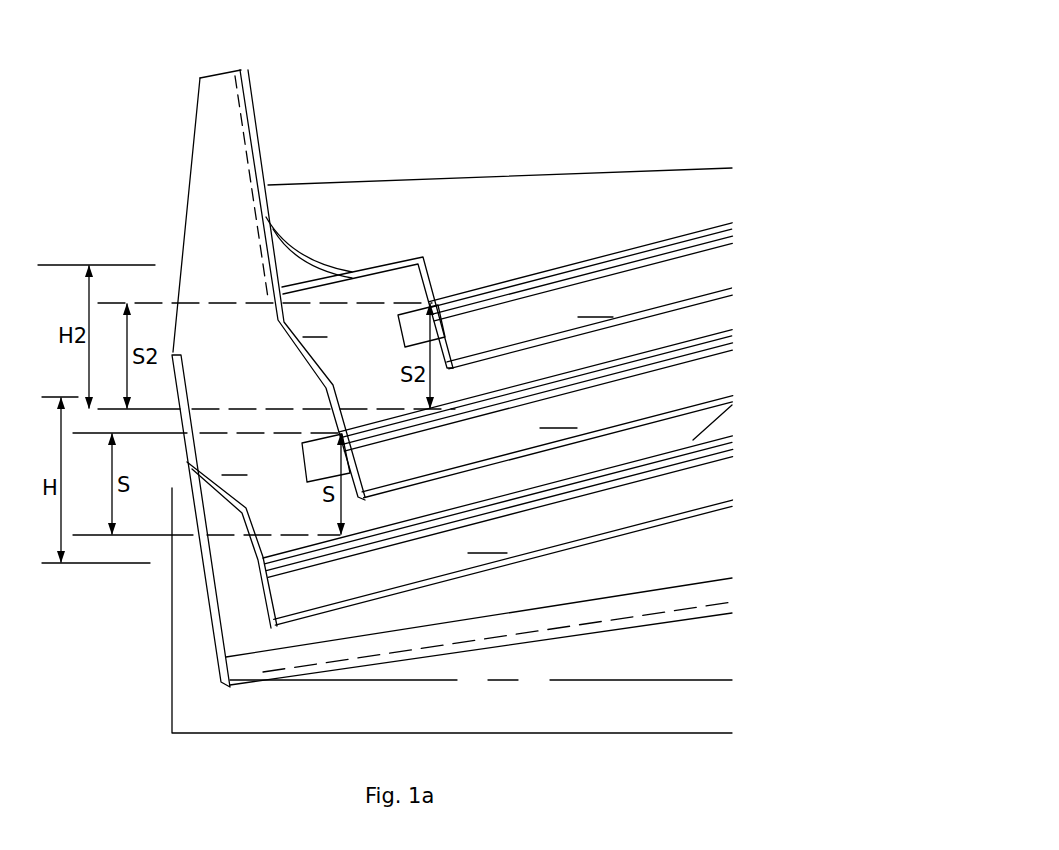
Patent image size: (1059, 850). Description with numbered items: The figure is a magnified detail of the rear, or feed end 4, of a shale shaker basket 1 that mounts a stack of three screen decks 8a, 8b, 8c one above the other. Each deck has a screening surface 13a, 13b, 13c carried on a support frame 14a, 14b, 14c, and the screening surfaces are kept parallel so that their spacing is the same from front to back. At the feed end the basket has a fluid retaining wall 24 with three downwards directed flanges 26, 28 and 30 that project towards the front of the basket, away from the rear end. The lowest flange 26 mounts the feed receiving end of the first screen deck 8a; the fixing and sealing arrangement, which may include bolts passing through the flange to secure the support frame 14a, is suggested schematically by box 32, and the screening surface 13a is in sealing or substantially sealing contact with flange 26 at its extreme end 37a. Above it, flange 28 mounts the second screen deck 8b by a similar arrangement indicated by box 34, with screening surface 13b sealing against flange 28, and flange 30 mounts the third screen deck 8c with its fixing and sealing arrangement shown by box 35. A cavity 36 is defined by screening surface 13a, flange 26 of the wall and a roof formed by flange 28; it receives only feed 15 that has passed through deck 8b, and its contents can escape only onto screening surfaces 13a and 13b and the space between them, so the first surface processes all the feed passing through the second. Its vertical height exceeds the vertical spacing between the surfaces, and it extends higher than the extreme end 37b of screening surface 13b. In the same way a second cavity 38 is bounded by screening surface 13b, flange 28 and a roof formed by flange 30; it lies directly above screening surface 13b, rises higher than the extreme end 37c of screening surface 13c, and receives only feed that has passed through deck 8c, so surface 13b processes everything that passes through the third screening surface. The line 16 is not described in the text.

The basket 1 is at (530, 88).
The feed end 4 is at (148, 184).
The feed 15 is at (348, 118).
The upper surface 16 is at (561, 207).
The flange 30 is at (428, 298).
The first screen deck 8a is at (715, 485).
The second screen deck 8b is at (715, 377).
The third screen deck 8c is at (715, 268).
The screening surface 13a is at (373, 532).
The screening surface 13b is at (463, 398).
The screening surface 13c is at (579, 262).
The support frame 14a is at (488, 543).
The support frame 14b is at (560, 415).
The support frame 14c is at (597, 305).
The fluid retaining wall 24 is at (187, 447).
The flange 26 is at (215, 560).
The flange 28 is at (348, 412).
The fixing and sealing arrangement 32 is at (226, 590).
The fixing and sealing arrangement 34 is at (303, 463).
The fixing and sealing arrangement 35 is at (400, 329).
The cavity 36 is at (235, 462).
The extreme end 37a is at (263, 560).
The extreme end 37b is at (383, 422).
The extreme end 37c is at (443, 294).
The second cavity 38 is at (316, 326).